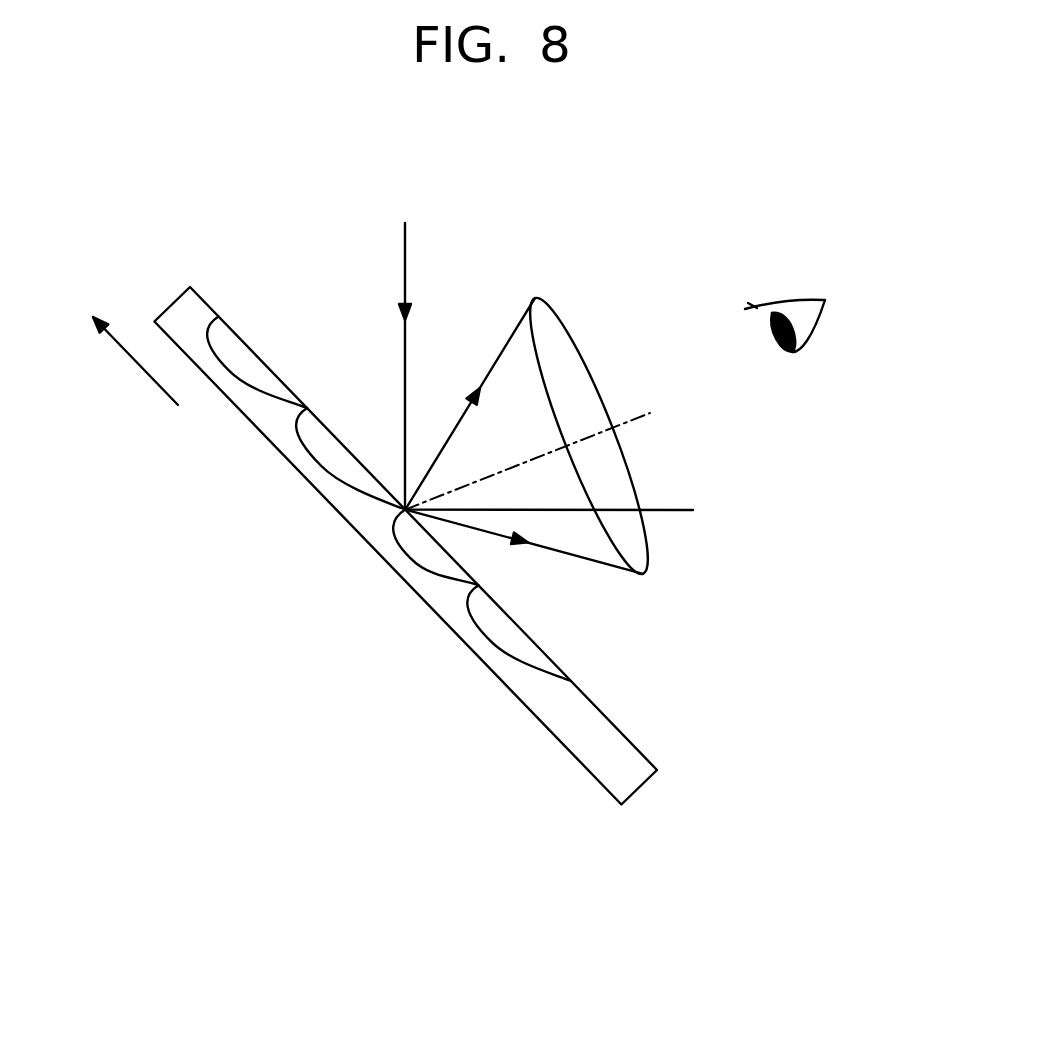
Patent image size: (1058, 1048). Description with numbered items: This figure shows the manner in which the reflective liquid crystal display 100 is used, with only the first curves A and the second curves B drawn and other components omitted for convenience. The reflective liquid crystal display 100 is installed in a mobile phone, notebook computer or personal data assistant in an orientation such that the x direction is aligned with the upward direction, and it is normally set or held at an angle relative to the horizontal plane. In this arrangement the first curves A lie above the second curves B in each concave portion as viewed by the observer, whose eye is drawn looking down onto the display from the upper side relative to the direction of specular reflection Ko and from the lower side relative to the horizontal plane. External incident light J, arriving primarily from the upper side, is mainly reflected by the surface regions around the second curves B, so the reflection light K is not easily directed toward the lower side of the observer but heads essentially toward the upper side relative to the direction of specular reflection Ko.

The reflective liquid crystal display 100 is at (650, 778).
The first curves A is at (307, 408).
The second curves B is at (350, 485).
The incident light J is at (404, 348).
The reflection light K is at (522, 366).
The direction of specular reflection Ko is at (569, 508).
The x direction x is at (127, 347).